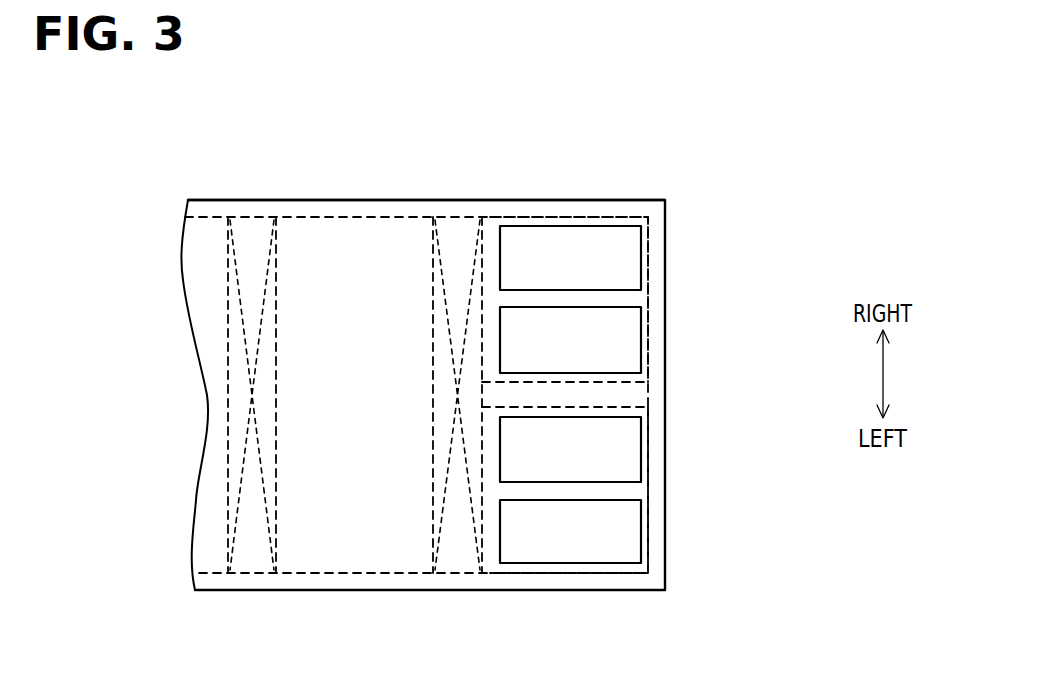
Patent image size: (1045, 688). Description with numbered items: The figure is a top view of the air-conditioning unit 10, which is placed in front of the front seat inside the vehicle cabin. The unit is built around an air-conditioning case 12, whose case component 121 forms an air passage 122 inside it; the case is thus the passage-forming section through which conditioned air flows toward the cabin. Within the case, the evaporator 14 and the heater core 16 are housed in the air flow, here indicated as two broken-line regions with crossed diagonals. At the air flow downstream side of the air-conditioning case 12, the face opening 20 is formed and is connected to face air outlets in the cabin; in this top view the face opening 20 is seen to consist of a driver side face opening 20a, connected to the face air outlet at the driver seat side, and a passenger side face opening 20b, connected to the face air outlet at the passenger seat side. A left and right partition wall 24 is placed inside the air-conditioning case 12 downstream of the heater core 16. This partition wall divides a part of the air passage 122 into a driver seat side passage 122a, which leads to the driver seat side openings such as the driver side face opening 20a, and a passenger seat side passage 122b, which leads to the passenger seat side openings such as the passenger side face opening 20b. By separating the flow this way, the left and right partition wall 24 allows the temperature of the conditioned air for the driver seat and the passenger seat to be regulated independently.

The air-conditioning unit 10 is at (183, 141).
The air-conditioning case 12 is at (245, 197).
The case component 121 is at (325, 199).
The air passage 122 is at (358, 372).
The driver seat side passage 122a is at (493, 298).
The passenger seat side passage 122b is at (492, 491).
The evaporator 14 is at (228, 500).
The heater core 16 is at (433, 483).
The face opening 20 is at (652, 392).
The driver side face opening 20a is at (587, 229).
The passenger side face opening 20b is at (600, 418).
The left and right partition wall 24 is at (603, 393).